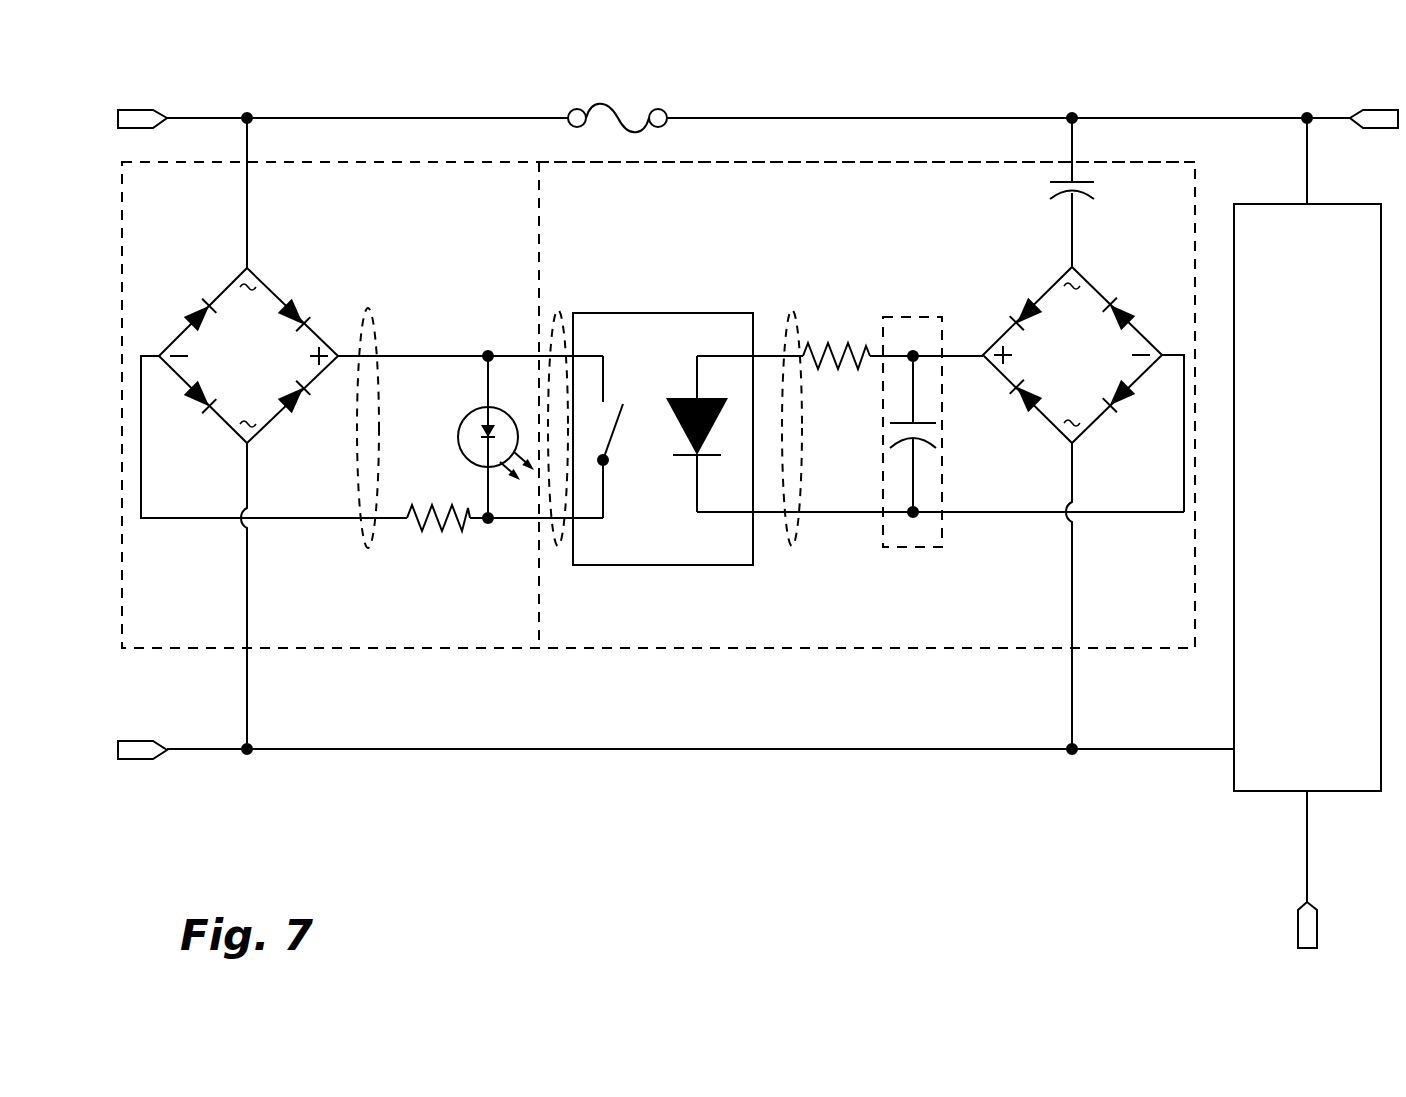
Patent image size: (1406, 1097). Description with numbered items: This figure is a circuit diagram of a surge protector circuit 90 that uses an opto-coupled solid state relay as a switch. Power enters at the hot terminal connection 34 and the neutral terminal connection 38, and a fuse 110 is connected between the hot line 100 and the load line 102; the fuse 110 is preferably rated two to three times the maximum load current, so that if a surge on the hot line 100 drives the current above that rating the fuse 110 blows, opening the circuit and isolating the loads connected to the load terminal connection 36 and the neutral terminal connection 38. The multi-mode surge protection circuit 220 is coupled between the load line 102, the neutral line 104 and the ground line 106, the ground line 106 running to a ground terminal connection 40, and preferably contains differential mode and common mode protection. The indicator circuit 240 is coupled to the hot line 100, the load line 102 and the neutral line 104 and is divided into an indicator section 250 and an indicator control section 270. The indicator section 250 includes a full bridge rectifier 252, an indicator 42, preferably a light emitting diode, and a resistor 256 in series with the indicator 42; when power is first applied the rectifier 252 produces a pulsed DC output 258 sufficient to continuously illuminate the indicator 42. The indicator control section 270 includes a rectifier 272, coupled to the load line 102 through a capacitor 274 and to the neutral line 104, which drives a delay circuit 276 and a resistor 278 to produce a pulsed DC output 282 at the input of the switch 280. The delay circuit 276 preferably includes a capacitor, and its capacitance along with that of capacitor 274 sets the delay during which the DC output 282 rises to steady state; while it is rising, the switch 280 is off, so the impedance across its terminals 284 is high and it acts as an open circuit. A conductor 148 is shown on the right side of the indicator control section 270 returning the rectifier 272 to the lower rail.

The hot terminal connection 34 is at (136, 112).
The load terminal connection 36 is at (1374, 110).
The neutral terminal connection 38 is at (144, 741).
The ground terminal 40 is at (1318, 924).
The indicator 42 is at (464, 420).
The surge protector circuit 90 is at (958, 802).
The hot line 100 is at (372, 114).
The load line 102 is at (775, 116).
The neutral line 104 is at (522, 750).
The ground line 106 is at (1306, 833).
The fuse 110 is at (612, 102).
The indicator driver circuit 148 is at (1112, 515).
The multi-mode surge protection circuit 220 is at (1358, 204).
The indicator circuit 240 is at (112, 578).
The indicator section 250 is at (383, 650).
The rectifier 252 is at (248, 433).
The resistor 256 is at (446, 524).
The pulsed DC output 258 is at (374, 310).
The indicator control section 270 is at (663, 650).
The rectifier 272 is at (1072, 508).
The capacitor 274 is at (1048, 195).
The delay circuit 276 is at (920, 316).
The resistor 278 is at (848, 342).
The switch 280 is at (657, 313).
The pulsed DC output 282 is at (790, 310).
The terminals 284 is at (562, 306).